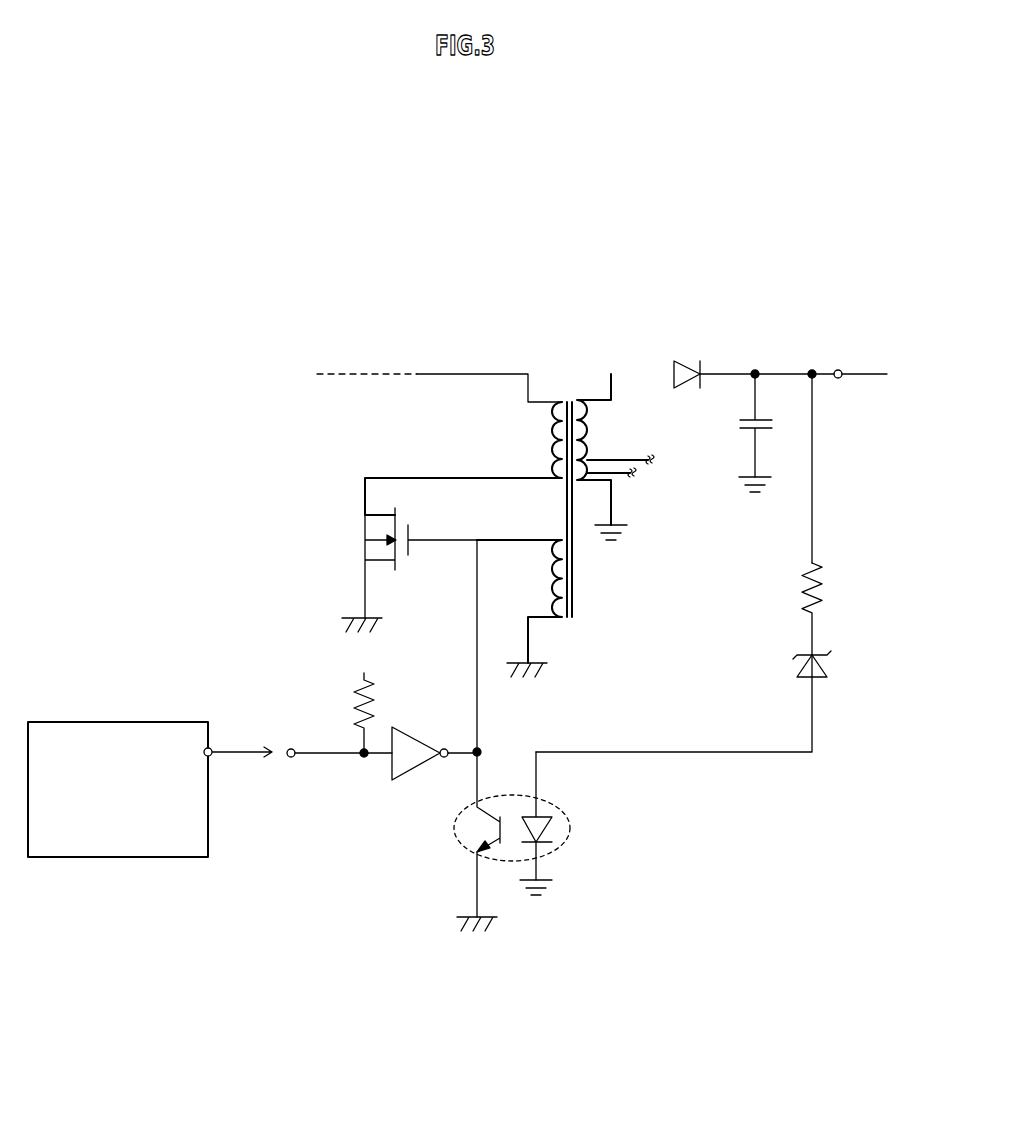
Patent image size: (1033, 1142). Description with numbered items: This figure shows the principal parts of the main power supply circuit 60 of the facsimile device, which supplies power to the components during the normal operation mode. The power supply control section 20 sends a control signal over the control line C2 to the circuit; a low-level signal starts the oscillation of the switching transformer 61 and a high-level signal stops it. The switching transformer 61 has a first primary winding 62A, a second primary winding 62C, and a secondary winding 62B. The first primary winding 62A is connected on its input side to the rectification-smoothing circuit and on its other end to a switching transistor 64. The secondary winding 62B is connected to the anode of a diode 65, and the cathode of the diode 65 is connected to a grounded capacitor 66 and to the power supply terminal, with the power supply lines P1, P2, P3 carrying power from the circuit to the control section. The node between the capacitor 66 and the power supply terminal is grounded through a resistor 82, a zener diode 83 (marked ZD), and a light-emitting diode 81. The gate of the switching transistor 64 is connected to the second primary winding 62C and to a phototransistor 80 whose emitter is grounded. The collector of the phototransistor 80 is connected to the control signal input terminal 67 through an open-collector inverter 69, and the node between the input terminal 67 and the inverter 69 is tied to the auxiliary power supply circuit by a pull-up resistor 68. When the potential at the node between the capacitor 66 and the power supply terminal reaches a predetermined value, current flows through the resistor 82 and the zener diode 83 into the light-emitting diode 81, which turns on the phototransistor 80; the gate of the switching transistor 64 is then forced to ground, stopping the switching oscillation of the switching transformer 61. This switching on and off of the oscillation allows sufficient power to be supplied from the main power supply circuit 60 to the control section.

The power supply control section 20 is at (120, 720).
The main power supply circuit 60 is at (763, 248).
The switching transformer 61 is at (566, 378).
The first primary winding 62A is at (552, 455).
The secondary winding 62B is at (585, 417).
The second primary winding 62C is at (563, 587).
The switching transistor 64 is at (360, 553).
The diode 65 is at (687, 363).
The capacitor 66 is at (745, 428).
The control signal input terminal 67 is at (293, 760).
The pull-up resistor 68 is at (373, 700).
The inverter 69 is at (392, 780).
The phototransistor 80 is at (503, 843).
The light-emitting diode 81 is at (553, 816).
The resistor 82 is at (822, 583).
The zener diode 83 is at (820, 678).
The power supply line P1 is at (863, 372).
The power supply line P2 is at (622, 458).
The power supply line P3 is at (617, 478).
The control line C2 is at (228, 758).
The zener diode symbol ZD is at (841, 668).